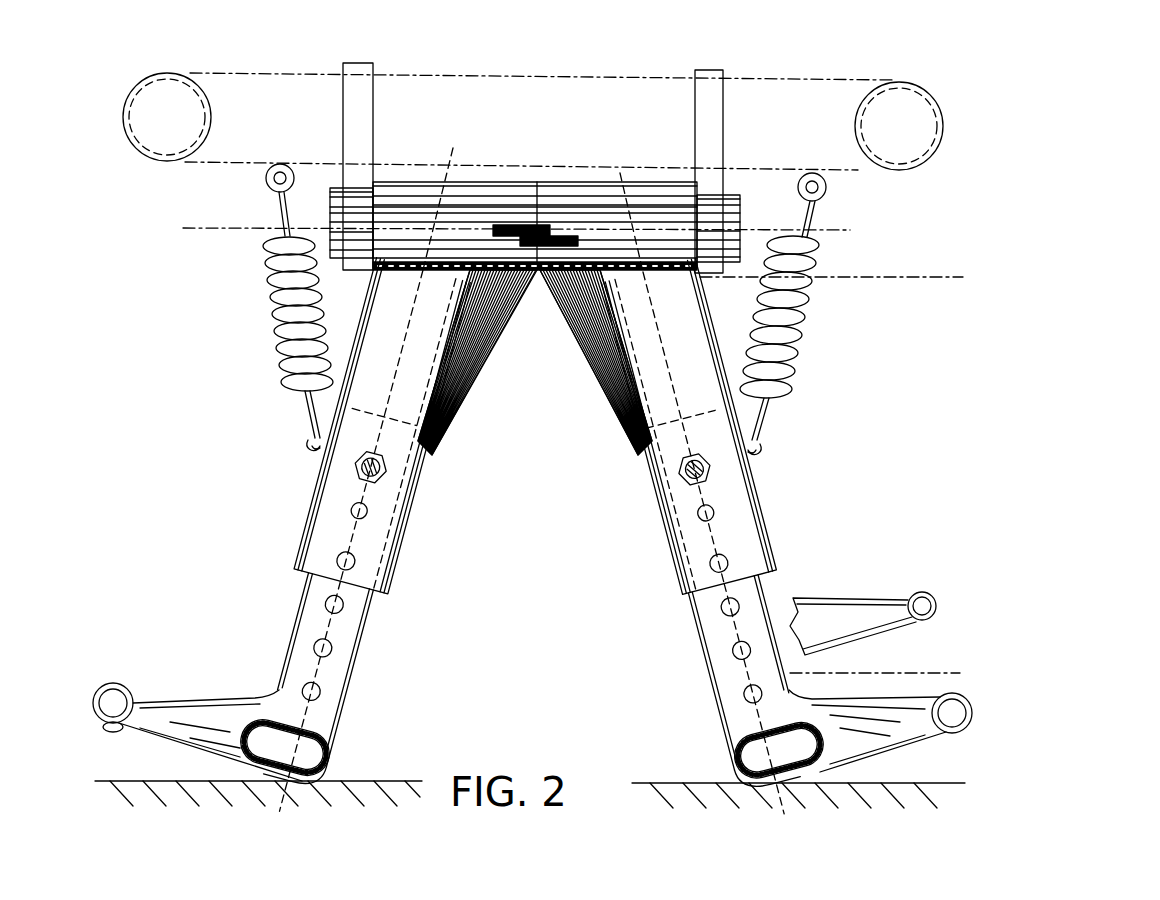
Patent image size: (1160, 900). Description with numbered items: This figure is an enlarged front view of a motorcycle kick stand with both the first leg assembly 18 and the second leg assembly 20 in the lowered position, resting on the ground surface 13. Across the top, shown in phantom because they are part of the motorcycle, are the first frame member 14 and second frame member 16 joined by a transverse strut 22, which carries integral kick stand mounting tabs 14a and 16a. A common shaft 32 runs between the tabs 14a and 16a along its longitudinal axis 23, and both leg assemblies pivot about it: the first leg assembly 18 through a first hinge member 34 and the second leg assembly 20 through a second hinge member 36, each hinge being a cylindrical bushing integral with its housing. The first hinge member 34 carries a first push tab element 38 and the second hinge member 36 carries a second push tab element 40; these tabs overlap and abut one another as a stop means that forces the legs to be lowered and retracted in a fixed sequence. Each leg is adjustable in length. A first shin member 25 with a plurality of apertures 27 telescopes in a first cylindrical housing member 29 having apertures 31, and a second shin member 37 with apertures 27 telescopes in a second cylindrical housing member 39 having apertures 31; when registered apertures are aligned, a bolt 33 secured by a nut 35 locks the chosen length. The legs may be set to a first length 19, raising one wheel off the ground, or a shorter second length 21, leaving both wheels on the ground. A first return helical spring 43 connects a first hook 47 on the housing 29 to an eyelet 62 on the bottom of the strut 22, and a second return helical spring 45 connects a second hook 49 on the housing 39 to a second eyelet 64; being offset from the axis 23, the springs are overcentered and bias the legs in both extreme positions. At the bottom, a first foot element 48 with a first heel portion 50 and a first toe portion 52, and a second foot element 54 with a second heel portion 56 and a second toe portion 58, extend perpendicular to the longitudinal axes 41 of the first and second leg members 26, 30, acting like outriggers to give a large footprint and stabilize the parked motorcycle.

The ground surface 13 is at (398, 785).
The first frame member 14 is at (900, 86).
The kick stand mounting tab 14a is at (720, 127).
The second frame member 16 is at (185, 72).
The kick stand mounting tab 16a is at (353, 90).
The first leg assembly 18 is at (770, 423).
The first length 19 is at (950, 275).
The second leg assembly 20 is at (280, 397).
The second length 21 is at (888, 275).
The transverse strut 22 is at (548, 93).
The longitudinal axis 23 is at (215, 227).
The first shin member 25 is at (757, 587).
The first leg member 26 is at (738, 537).
The apertures 27 is at (344, 603).
The first cylindrical housing member 29 is at (723, 352).
The second leg member 30 is at (307, 522).
The apertures 31 is at (368, 512).
The common shaft 32 is at (727, 210).
The bolt 33 is at (385, 460).
The first hinge member 34 is at (580, 330).
The nut 35 is at (388, 470).
The second hinge member 36 is at (477, 200).
The second shin member 37 is at (310, 618).
The first push tab element 38 is at (573, 233).
The second cylindrical housing member 39 is at (363, 293).
The second push tab element 40 is at (520, 223).
The longitudinal axes 41 is at (453, 152).
The first return helical spring 43 is at (810, 310).
The second return helical spring 45 is at (283, 337).
The first hook 47 is at (762, 452).
The first foot element 48 is at (760, 733).
The second hook 49 is at (307, 442).
The first heel portion 50 is at (743, 787).
The first toe portion 52 is at (978, 730).
The second foot element 54 is at (313, 722).
The second heel portion 56 is at (313, 772).
The second toe portion 58 is at (138, 703).
The eyelet 62 is at (827, 188).
The second eyelet 64 is at (268, 175).